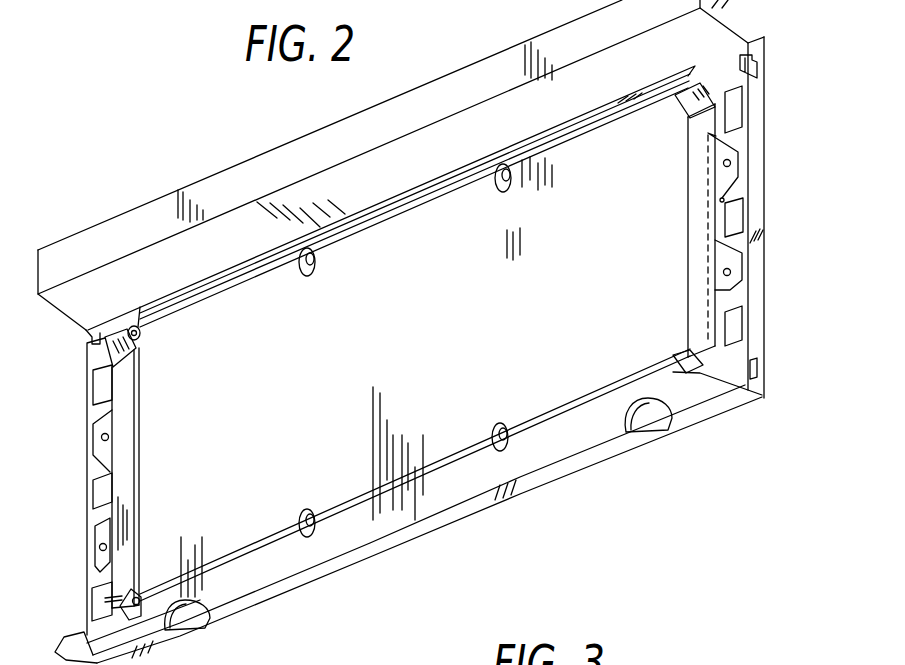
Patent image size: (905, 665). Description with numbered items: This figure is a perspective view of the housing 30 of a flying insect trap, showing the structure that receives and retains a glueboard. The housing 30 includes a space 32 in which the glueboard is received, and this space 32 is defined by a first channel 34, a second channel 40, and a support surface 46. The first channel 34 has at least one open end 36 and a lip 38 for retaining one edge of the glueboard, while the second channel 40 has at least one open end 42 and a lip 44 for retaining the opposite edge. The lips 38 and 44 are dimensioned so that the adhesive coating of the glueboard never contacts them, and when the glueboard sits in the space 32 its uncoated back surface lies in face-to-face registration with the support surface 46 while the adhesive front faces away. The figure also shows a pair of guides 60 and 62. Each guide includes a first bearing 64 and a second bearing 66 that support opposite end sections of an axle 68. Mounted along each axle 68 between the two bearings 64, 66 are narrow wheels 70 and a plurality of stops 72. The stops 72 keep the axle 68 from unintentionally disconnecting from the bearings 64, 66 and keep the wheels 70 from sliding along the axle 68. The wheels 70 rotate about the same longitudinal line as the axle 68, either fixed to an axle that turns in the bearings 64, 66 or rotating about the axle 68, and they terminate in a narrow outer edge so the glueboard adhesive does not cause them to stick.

The housing 30 is at (106, 217).
The space 32 is at (213, 378).
The first channel 34 is at (140, 451).
The open end 36 is at (106, 630).
The lip 38 is at (125, 510).
The second channel 40 is at (698, 231).
The open end 42 is at (715, 362).
The lip 44 is at (696, 279).
The support surface 46 is at (395, 351).
The guide 60 is at (352, 496).
The guide 62 is at (418, 214).
The first bearing 64 is at (106, 352).
The second bearing 66 is at (683, 108).
The axle 68 is at (248, 284).
The wheels 70 is at (302, 277).
The stops 72 is at (142, 333).